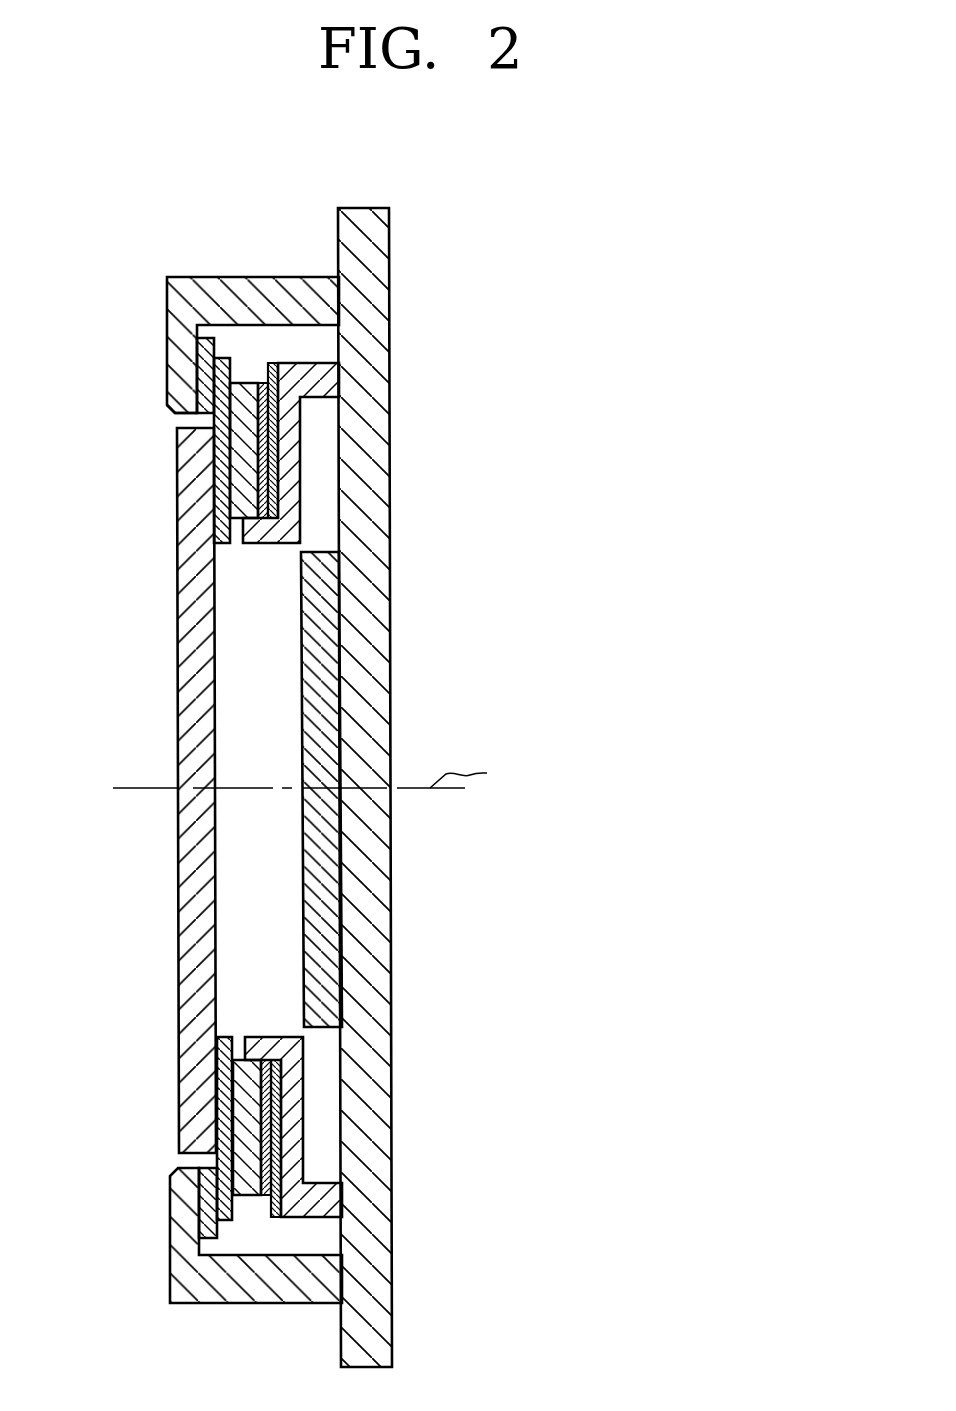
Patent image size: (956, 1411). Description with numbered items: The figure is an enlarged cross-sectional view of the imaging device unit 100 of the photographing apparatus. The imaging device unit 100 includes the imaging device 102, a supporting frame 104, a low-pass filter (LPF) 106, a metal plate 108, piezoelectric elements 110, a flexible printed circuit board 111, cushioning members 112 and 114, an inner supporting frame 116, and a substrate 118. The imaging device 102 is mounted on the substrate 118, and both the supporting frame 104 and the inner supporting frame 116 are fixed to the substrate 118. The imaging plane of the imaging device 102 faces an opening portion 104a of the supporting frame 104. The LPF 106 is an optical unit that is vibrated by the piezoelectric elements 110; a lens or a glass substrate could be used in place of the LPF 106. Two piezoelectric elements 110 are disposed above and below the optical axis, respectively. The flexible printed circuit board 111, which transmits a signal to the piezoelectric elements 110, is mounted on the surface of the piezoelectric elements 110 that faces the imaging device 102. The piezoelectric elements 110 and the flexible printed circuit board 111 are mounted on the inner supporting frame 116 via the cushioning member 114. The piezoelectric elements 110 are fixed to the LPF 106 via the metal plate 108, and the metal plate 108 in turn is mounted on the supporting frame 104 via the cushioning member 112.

The imaging device unit 100 is at (682, 1315).
The imaging device 102 is at (320, 683).
The supporting frame 104 is at (187, 284).
The opening portion 104a is at (183, 418).
The low-pass filter (LPF) 106 is at (192, 622).
The metal plate 108 is at (217, 478).
The piezoelectric elements 110 is at (246, 386).
The flexible printed circuit board 111 is at (265, 383).
The cushioning member 112 is at (174, 376).
The cushioning member 114 is at (274, 363).
The inner supporting frame 116 is at (330, 379).
The substrate 118 is at (372, 594).